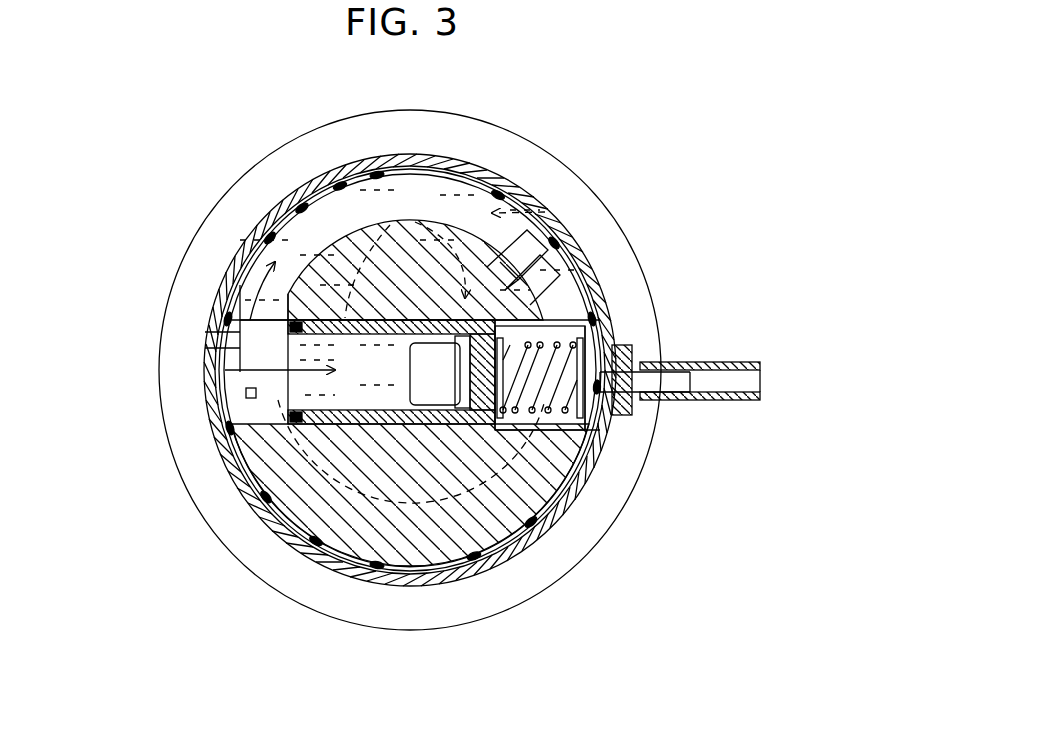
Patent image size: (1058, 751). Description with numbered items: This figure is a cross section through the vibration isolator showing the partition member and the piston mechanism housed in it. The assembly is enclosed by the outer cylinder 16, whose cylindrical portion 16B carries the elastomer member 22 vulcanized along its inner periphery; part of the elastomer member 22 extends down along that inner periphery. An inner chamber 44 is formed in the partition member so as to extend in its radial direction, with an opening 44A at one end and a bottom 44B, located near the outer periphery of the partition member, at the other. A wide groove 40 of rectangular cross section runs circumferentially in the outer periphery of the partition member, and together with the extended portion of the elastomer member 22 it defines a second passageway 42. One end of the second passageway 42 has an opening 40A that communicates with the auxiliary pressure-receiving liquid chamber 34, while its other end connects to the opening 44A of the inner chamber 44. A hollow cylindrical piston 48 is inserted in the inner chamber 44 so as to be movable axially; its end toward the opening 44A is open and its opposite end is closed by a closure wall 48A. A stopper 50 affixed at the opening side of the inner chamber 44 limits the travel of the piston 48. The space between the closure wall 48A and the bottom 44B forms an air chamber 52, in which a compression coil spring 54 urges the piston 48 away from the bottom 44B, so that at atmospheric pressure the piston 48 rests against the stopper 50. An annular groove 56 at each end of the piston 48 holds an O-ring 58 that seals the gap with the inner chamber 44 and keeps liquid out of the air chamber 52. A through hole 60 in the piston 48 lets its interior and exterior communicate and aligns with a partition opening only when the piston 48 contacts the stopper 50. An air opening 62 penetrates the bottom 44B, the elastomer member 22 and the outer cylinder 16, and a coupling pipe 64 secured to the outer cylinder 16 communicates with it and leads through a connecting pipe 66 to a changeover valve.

The outer cylinder 16 is at (216, 280).
The cylindrical portion 16B is at (247, 240).
The elastomer member 22 is at (302, 205).
The auxiliary pressure-receiving liquid chamber 34 is at (495, 160).
The wide groove 40 is at (418, 212).
The opening 40A is at (558, 248).
The second passageway 42 is at (322, 178).
The inner chamber 44 is at (608, 292).
The opening 44A is at (242, 345).
The bottom 44B is at (622, 318).
The piston 48 is at (525, 325).
The closure wall 48A is at (470, 430).
The stopper 50 is at (250, 397).
The air chamber 52 is at (543, 435).
The compression coil spring 54 is at (562, 432).
The annular groove 56 is at (305, 430).
The O-ring 58 is at (300, 420).
The through hole 60 is at (415, 400).
The air opening 62 is at (662, 394).
The coupling pipe 64 is at (622, 418).
The connecting pipe 66 is at (740, 366).